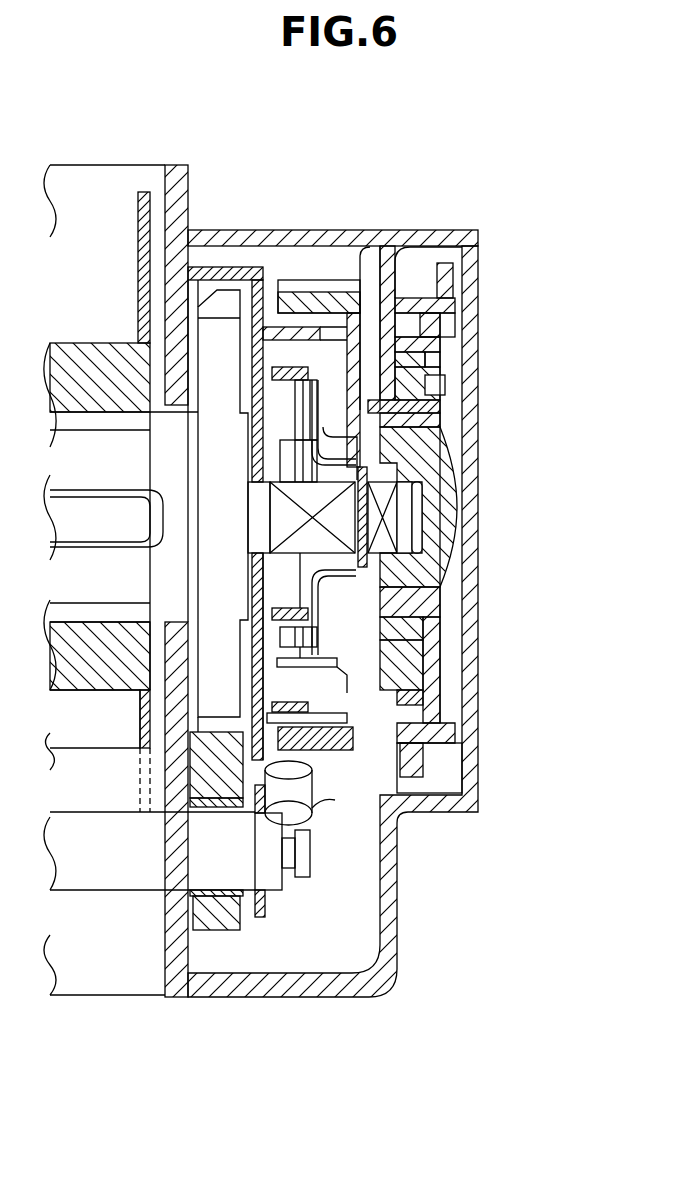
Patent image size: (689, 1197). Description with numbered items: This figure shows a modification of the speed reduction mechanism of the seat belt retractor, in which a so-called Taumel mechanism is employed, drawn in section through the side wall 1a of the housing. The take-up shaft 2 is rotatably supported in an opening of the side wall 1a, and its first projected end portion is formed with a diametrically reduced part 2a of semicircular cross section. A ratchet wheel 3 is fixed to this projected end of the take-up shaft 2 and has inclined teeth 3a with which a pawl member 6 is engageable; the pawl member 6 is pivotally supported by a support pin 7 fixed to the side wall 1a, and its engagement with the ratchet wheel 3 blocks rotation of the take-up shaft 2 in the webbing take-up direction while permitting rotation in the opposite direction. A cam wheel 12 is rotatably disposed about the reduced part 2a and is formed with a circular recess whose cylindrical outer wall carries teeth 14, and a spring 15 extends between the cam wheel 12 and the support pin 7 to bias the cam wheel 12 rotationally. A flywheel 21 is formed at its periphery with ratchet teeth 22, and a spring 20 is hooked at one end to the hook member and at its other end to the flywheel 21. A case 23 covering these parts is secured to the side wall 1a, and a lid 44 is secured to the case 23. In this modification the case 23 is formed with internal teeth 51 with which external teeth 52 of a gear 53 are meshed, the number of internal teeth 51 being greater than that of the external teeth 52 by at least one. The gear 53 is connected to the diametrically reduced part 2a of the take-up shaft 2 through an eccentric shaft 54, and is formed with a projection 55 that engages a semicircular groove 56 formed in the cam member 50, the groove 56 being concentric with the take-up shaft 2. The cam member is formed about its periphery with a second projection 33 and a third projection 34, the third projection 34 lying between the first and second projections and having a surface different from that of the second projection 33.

The side wall 1a is at (175, 168).
The take-up shaft 2 is at (60, 583).
The diametrically reduced part 2a is at (395, 540).
The ratchet wheel 3 is at (165, 330).
The inclined teeth 3a is at (220, 297).
The pawl member 6 is at (220, 930).
The support pin 7 is at (133, 882).
The cam wheel 12 is at (260, 267).
The teeth 14 is at (303, 340).
The spring 15 is at (265, 813).
The spring 20 is at (423, 603).
The flywheel 21 is at (358, 403).
The ratchet teeth 22 is at (316, 280).
The case 23 is at (423, 230).
The second projection 33 is at (420, 773).
The third projection 34 is at (457, 262).
The lid 44 is at (430, 322).
The cam member 50 is at (433, 662).
The internal teeth 51 is at (442, 370).
The external teeth 52 is at (415, 343).
The gear 53 is at (427, 630).
The eccentric shaft 54 is at (438, 487).
The projection 55 is at (437, 362).
The semicircular groove 56 is at (430, 388).